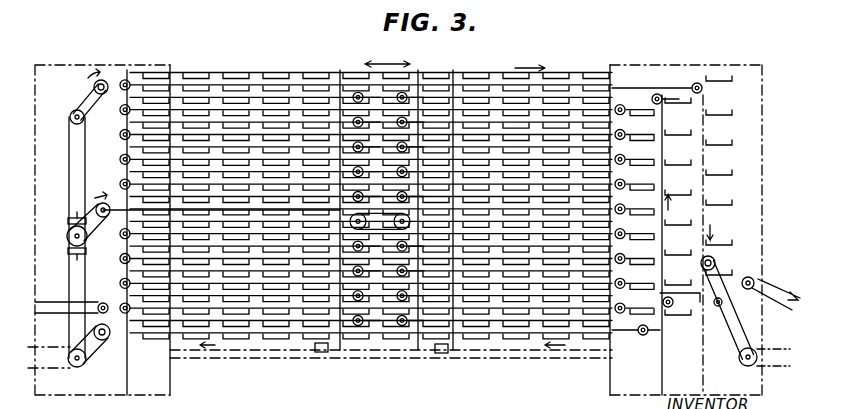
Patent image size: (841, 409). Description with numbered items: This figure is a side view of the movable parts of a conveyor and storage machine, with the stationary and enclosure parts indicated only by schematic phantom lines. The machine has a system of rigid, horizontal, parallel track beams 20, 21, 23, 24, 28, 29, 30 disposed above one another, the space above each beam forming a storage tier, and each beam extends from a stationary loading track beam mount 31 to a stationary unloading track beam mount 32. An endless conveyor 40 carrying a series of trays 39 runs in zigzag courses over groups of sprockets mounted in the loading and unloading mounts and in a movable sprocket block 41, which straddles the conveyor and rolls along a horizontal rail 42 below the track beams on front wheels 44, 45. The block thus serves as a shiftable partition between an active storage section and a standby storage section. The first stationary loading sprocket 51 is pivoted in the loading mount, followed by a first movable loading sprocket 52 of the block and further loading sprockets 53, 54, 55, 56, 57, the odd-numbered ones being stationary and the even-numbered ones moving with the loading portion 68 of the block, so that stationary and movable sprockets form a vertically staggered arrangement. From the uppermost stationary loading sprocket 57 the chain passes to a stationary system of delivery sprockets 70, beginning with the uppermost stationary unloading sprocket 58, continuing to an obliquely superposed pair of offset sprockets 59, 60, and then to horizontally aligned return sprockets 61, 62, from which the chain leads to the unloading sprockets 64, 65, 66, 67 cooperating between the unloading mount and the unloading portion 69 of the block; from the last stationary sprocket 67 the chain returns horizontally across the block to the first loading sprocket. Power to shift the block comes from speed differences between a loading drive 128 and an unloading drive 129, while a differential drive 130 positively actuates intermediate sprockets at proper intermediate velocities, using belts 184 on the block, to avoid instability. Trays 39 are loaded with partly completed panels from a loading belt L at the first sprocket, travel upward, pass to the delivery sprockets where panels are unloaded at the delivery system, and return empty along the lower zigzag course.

The track beam 20 is at (312, 69).
The track beam 21 is at (372, 112).
The track beam 23 is at (396, 157).
The track beam 24 is at (396, 182).
The track beam 28 is at (246, 290).
The track beam 29 is at (270, 300).
The track beam 30 is at (305, 330).
The loading track beam mount 31 is at (160, 60).
The unloading track beam mount 32 is at (698, 64).
The trays 39 is at (278, 95).
The conveyor 40 is at (565, 76).
The sprocket block 41 is at (416, 346).
The rail 42 is at (272, 360).
The front wheel 44 is at (326, 354).
The front wheel 45 is at (448, 354).
The stationary loading sprocket 51 is at (106, 340).
The movable loading sprocket 52 is at (368, 324).
The loading sprocket 53 is at (120, 305).
The loading sprocket 54 is at (372, 292).
The loading sprocket 55 is at (120, 137).
The loading sprocket 56 is at (392, 90).
The loading sprocket 57 is at (105, 80).
The unloading sprocket 58 is at (702, 88).
The unloading sprocket 59 is at (714, 260).
The unloading sprocket 60 is at (726, 270).
The return sprocket 61 is at (716, 306).
The return sprocket 62 is at (668, 308).
The unloading sprocket 64 is at (410, 98).
The unloading sprocket 65 is at (620, 105).
The unloading sprocket 66 is at (405, 346).
The unloading sprocket 67 is at (644, 336).
The loading portion 68 is at (356, 88).
The unloading portion 69 is at (406, 94).
The system of delivery sprockets 70 is at (738, 170).
The loading drive 128 is at (93, 365).
The unloading drive 129 is at (734, 371).
The differential drive 130 is at (64, 247).
The belt 184 is at (378, 214).
The loading belt L is at (62, 298).